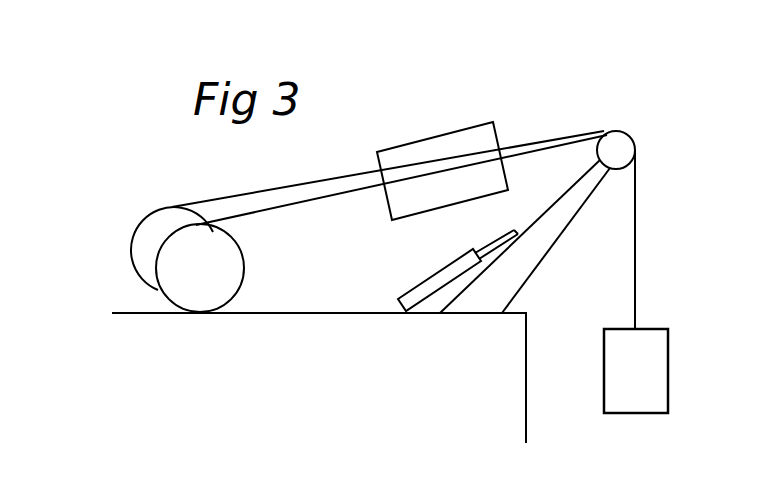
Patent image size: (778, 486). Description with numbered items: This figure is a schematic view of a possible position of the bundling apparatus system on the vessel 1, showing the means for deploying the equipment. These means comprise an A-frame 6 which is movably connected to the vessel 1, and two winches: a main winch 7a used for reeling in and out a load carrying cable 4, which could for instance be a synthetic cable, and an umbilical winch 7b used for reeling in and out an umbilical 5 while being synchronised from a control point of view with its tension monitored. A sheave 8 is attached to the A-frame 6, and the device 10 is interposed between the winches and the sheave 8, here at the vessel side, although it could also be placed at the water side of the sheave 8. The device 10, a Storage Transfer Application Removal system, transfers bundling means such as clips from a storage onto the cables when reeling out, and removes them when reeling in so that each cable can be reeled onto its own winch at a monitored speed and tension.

The vessel 1 is at (322, 354).
The load carrying cable 4 is at (305, 205).
The umbilical 5 is at (300, 186).
The A-frame 6 is at (528, 253).
The main winch 7a is at (213, 263).
The umbilical winch 7b is at (148, 234).
The sheave 8 is at (620, 150).
The device 10 is at (442, 143).